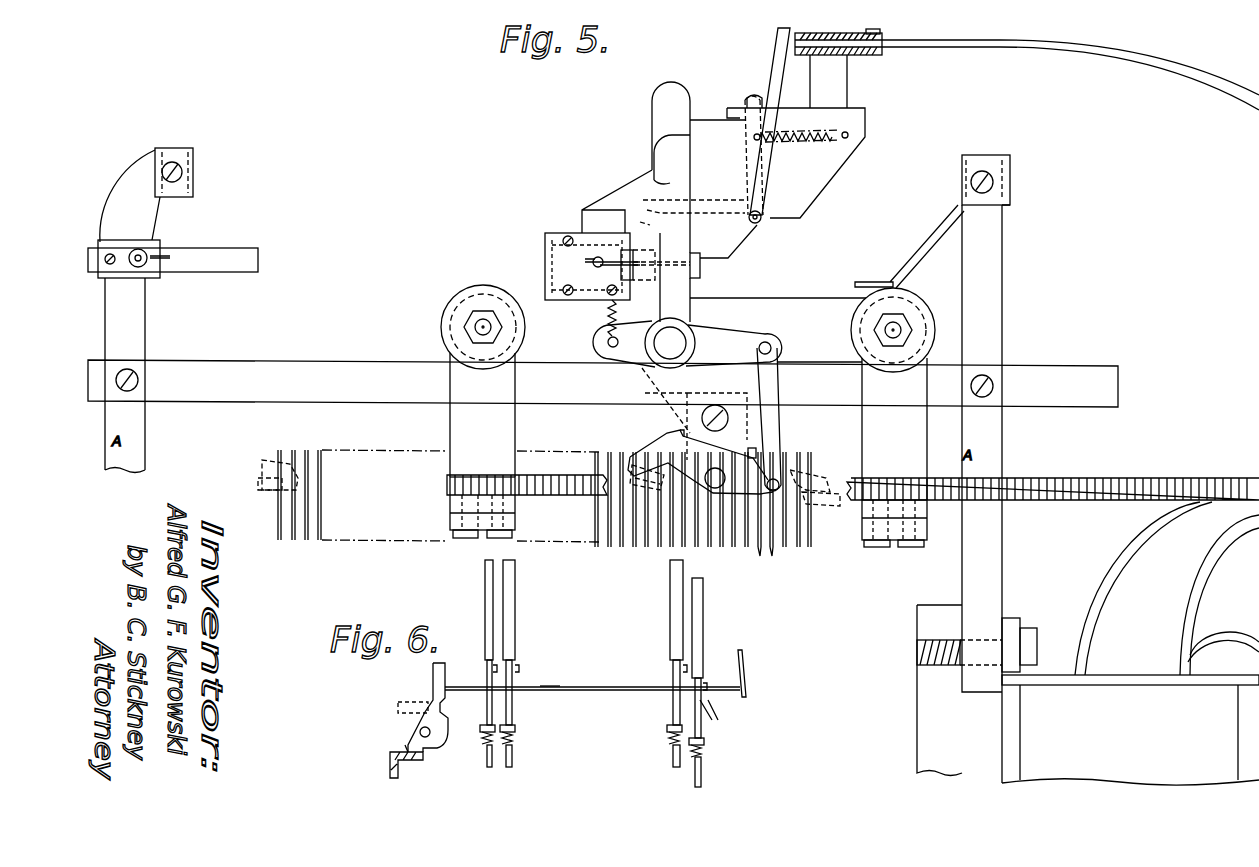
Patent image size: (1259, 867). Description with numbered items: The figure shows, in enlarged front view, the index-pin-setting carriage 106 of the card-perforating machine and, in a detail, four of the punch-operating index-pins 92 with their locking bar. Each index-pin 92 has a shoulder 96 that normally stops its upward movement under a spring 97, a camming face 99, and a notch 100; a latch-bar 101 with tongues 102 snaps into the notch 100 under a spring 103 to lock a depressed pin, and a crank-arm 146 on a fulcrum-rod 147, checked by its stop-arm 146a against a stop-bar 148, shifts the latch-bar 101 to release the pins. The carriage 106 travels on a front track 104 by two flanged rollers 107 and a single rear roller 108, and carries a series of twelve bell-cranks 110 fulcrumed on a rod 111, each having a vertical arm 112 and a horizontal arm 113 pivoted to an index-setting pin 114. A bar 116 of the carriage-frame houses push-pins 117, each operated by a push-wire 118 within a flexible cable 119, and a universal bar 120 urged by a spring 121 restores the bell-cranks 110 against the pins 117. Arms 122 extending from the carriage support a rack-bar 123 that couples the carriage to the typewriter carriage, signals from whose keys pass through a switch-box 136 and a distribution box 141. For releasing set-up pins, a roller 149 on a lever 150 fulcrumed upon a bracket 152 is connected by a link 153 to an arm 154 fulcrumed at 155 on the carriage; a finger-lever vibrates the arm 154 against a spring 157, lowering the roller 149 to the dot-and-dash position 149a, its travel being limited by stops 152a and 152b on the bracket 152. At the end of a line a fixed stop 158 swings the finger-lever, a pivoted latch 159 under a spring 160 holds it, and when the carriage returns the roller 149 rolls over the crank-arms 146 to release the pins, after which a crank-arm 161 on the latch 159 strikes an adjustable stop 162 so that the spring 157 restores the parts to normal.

In FIG. 6, the index-pin 92 is at (493, 604).
In FIG. 6, the shoulder 96 is at (496, 728).
In FIG. 6, the spring 97 is at (494, 740).
In FIG. 6, the camming face 99 is at (715, 717).
In FIG. 6, the notch 100 is at (497, 668).
In FIG. 6, the latch-bar 101 is at (590, 686).
In FIG. 6, the tongue 102 is at (543, 686).
In FIG. 6, the spring 103 is at (743, 675).
In FIG. 5, the front track 104 is at (603, 383).
In FIG. 5, the carriage 106 is at (646, 165).
In FIG. 5, the flanged roller 107 is at (490, 298).
In FIG. 5, the roller 108 is at (778, 330).
In FIG. 5, the bell-crank 110 is at (732, 189).
In FIG. 5, the rod 111 is at (760, 222).
In FIG. 5, the vertically-disposed arm 112 is at (775, 56).
In FIG. 5, the horizontal arm 113 is at (692, 221).
In FIG. 5, the index-setting pin 114 is at (629, 343).
In FIG. 5, the bar 116 is at (848, 36).
In FIG. 5, the push-pin 117 is at (805, 40).
In FIG. 5, the push-wire 118 is at (858, 52).
In FIG. 5, the flexible cable 119 is at (1020, 40).
In FIG. 5, the universal bar 120 is at (749, 100).
In FIG. 5, the spring 121 is at (820, 140).
In FIG. 5, the arm 122 is at (688, 450).
In FIG. 5, the rack-bar 123 is at (563, 484).
In FIG. 5, the switch-box 136 is at (672, 159).
In FIG. 5, the distribution box 141 is at (1130, 730).
In FIG. 5, the crank-arm 146 is at (308, 452).
In FIG. 6, the crank-arm 146 is at (440, 662).
In FIG. 6, the stop-arm 146a is at (408, 748).
In FIG. 6, the fulcrum-rod 147 is at (431, 731).
In FIG. 6, the stop-bar 148 is at (390, 768).
In FIG. 5, the roller 149 is at (262, 464).
In FIG. 5, the lowered roller position 149a is at (258, 486).
In FIG. 6, the lowered roller position 149a is at (410, 700).
In FIG. 5, the lever 150 is at (700, 462).
In FIG. 5, the bracket 152 is at (694, 414).
In FIG. 5, the stop 152a is at (757, 452).
In FIG. 5, the stop 152b is at (681, 432).
In FIG. 5, the link 153 is at (780, 413).
In FIG. 5, the arm 154 is at (746, 348).
In FIG. 5, the fulcrum 155 is at (687, 343).
In FIG. 5, the spring 157 is at (610, 322).
In FIG. 5, the fixed stop 158 is at (878, 281).
In FIG. 5, the pivoted latch 159 is at (700, 267).
In FIG. 5, the spring 160 is at (598, 266).
In FIG. 5, the crank-arm 161 is at (600, 255).
In FIG. 5, the adjustable stop 162 is at (173, 259).